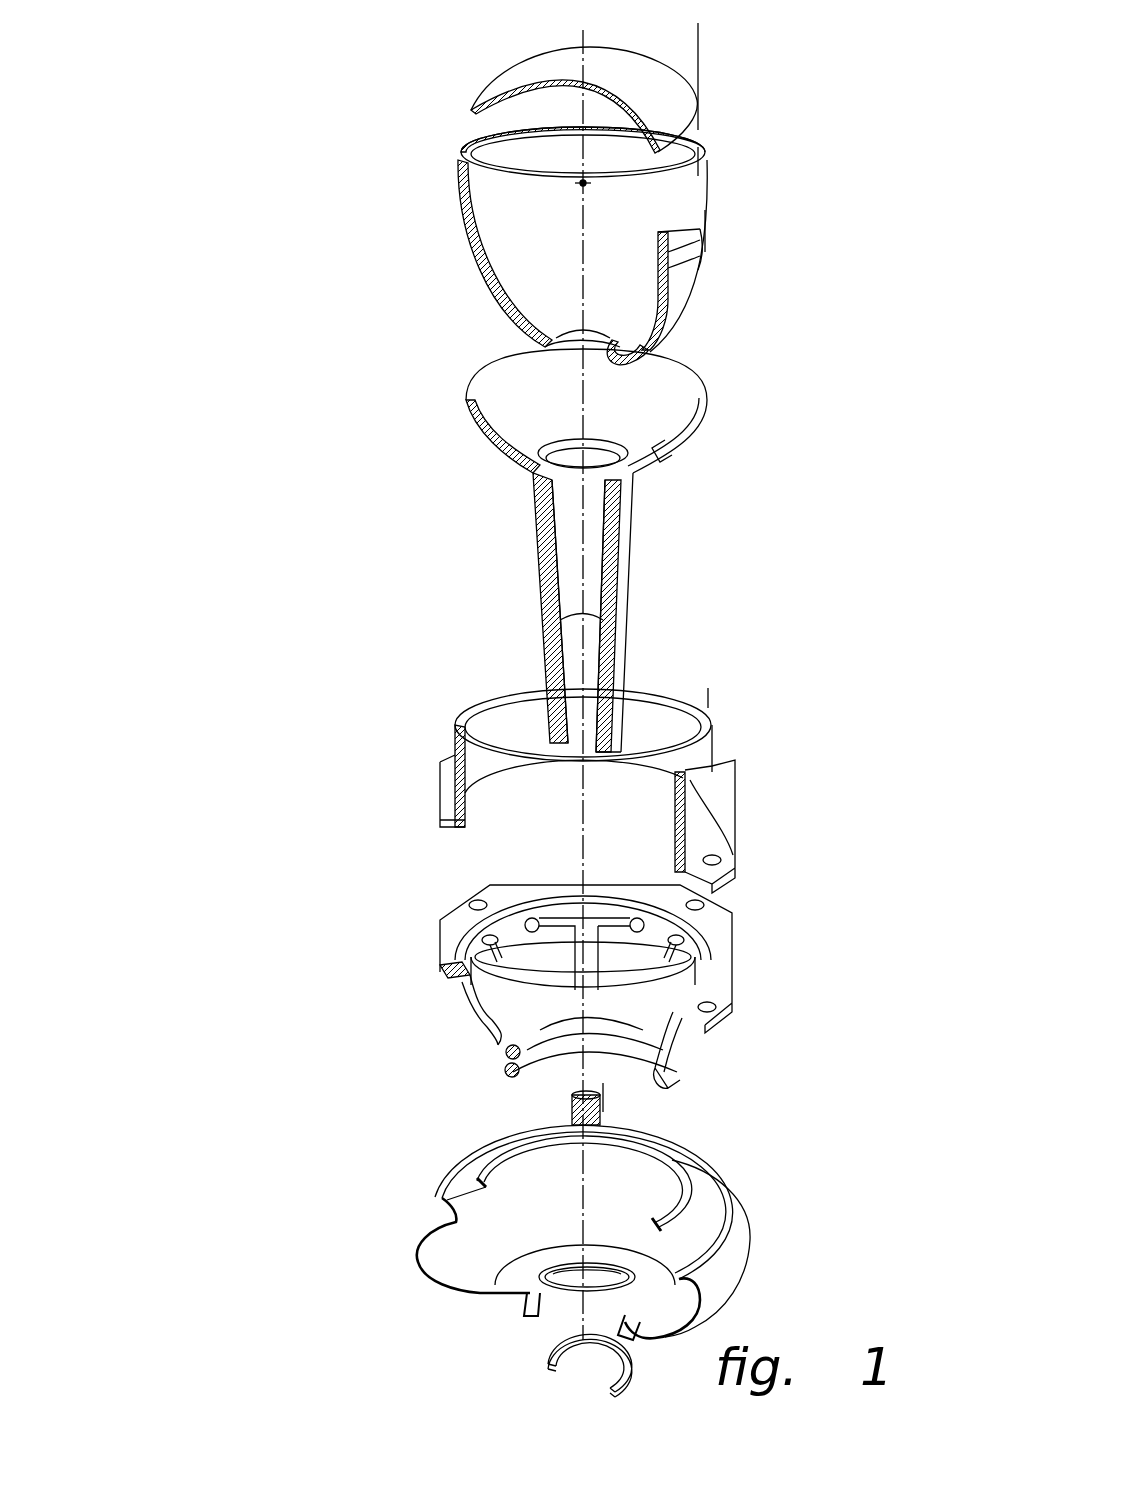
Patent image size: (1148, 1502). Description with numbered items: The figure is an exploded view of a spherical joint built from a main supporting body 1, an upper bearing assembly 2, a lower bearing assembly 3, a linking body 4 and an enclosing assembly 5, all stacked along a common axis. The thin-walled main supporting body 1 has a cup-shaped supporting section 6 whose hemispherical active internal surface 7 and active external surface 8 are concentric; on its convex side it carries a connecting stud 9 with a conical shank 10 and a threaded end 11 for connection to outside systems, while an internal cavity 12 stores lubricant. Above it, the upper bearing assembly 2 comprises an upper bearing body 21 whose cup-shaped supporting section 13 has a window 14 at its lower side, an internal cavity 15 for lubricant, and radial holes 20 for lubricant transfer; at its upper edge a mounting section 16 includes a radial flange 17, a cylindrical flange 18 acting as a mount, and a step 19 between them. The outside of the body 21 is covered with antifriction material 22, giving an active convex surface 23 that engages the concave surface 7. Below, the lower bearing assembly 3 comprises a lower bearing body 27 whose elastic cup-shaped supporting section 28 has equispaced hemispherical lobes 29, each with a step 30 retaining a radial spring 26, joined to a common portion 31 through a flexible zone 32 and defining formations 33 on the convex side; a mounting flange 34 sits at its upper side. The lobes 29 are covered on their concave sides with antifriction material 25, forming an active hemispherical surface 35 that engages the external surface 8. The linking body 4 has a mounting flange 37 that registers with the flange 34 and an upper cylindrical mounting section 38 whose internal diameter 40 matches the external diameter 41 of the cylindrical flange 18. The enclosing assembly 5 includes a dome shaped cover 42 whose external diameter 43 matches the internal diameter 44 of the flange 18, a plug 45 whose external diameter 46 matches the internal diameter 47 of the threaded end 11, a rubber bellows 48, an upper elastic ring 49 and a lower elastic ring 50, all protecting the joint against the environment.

The main supporting body 1 is at (310, 479).
The upper bearing assembly 2 is at (227, 277).
The lower bearing assembly 3 is at (227, 935).
The linking body 4 is at (310, 693).
The enclosing assembly 5 is at (230, 1153).
The cup-shaped supporting section 6 is at (485, 438).
The active internal surface 7 is at (635, 416).
The active external surface 8 is at (668, 452).
The connecting stud 9 is at (383, 532).
The conical shank 10 is at (548, 540).
The threaded end 11 is at (555, 693).
The internal cavity 12 is at (593, 532).
The cup-shaped supporting section 13 is at (475, 267).
The window 14 is at (613, 352).
The internal cavity 15 is at (620, 252).
The mounting section 16 is at (377, 145).
The radial flange 17 is at (480, 220).
The cylindrical flange 18 is at (465, 200).
The step 19 is at (688, 198).
The radial holes 20 is at (588, 181).
The upper bearing body 21 is at (307, 210).
The antifriction material 22 is at (510, 320).
The active convex surface 23 is at (678, 297).
The antifriction material 25 is at (497, 1013).
The radial spring 26 is at (510, 1070).
The lower bearing body 27 is at (310, 870).
The cup-shaped supporting section 28 is at (385, 908).
The lobes 29 is at (478, 989).
The step 30 is at (667, 1058).
The common portion 31 is at (458, 970).
The flexible zone 32 is at (510, 937).
The formations 33 is at (633, 923).
The mounting flange 34 is at (460, 905).
The active hemispherical surface 35 is at (637, 966).
The mounting flange 37 is at (440, 820).
The upper cylindrical mounting section 38 is at (455, 745).
The internal diameter 40 is at (709, 698).
The external diameter 41 is at (795, 238).
The dome shaped cover 42 is at (160, 1255).
The external diameter 43 is at (700, 35).
The internal diameter 44 is at (795, 163).
The plug 45 is at (570, 1108).
The external diameter 46 is at (605, 1087).
The internal diameter 47 is at (605, 630).
The rubber bellows 48 is at (433, 1234).
The upper elastic ring 49 is at (490, 1176).
The lower elastic ring 50 is at (545, 1353).